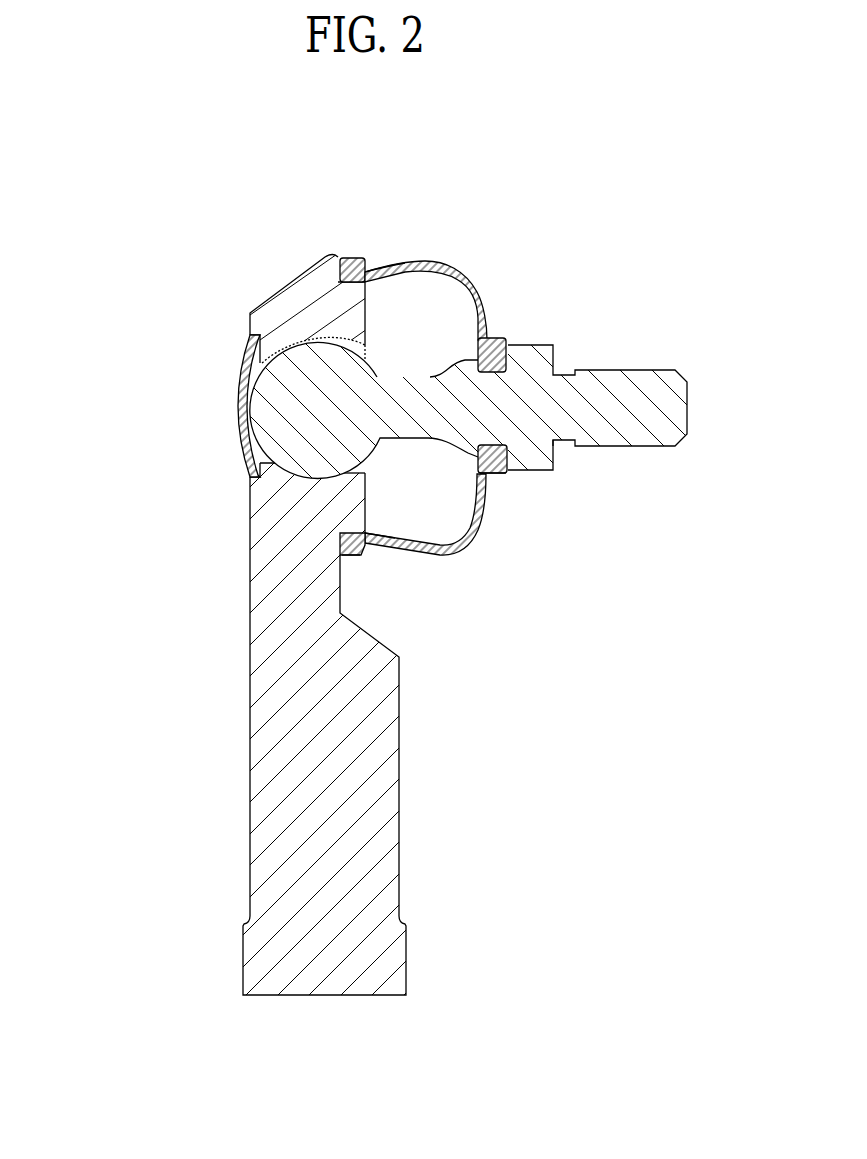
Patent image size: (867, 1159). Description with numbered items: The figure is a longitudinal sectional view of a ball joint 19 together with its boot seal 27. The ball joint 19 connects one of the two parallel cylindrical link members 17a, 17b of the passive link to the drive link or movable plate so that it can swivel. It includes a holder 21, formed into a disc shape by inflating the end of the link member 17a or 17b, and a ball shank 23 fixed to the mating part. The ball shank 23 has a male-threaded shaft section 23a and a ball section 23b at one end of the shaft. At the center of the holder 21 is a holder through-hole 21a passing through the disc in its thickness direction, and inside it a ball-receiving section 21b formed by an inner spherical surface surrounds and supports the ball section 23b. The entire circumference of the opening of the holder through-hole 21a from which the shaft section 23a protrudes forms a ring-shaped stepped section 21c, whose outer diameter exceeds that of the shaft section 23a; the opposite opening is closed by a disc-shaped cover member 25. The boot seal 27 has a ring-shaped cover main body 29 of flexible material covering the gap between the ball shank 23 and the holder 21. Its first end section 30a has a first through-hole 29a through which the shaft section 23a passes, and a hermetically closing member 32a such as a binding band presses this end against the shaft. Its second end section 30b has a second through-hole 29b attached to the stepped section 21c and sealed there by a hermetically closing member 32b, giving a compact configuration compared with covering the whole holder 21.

The link member 17a is at (237, 722).
The link member 17b is at (232, 773).
The ball joint 19 is at (377, 579).
The holder 21 is at (312, 346).
The holder through-hole 21a is at (366, 473).
The ball-receiving section 21b is at (256, 345).
The stepped section 21c is at (350, 257).
The ball shank 23 is at (445, 256).
The shaft section 23a is at (465, 357).
The ball section 23b is at (372, 366).
The cover member 25 is at (238, 403).
The boot seal 27 is at (415, 543).
The cover main body 29 is at (415, 543).
The first through-hole 29a is at (557, 446).
The second through-hole 29b is at (346, 532).
The first end section 30a is at (546, 509).
The second end section 30b is at (392, 587).
The hermetically closing member 32a is at (498, 474).
The hermetically closing member 32b is at (384, 598).